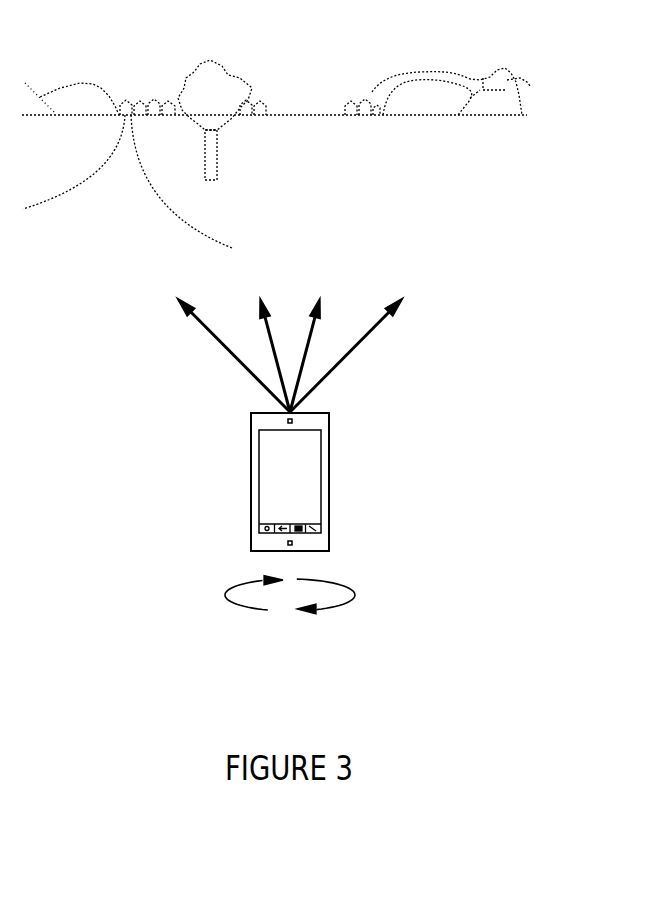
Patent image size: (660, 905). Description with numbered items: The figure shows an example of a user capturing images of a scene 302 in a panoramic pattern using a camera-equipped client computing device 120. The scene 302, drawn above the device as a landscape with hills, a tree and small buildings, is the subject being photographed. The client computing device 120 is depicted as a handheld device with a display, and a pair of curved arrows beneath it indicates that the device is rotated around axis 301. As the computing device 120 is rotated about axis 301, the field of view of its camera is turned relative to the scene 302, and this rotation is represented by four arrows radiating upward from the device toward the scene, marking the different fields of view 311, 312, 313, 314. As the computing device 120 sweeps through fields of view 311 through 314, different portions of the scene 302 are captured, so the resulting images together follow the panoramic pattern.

The client computing device 120 is at (251, 482).
The axis 301 is at (355, 592).
The scene 302 is at (276, 171).
The field of view 311 is at (219, 338).
The field of view 312 is at (279, 378).
The field of view 313 is at (301, 377).
The field of view 314 is at (367, 335).